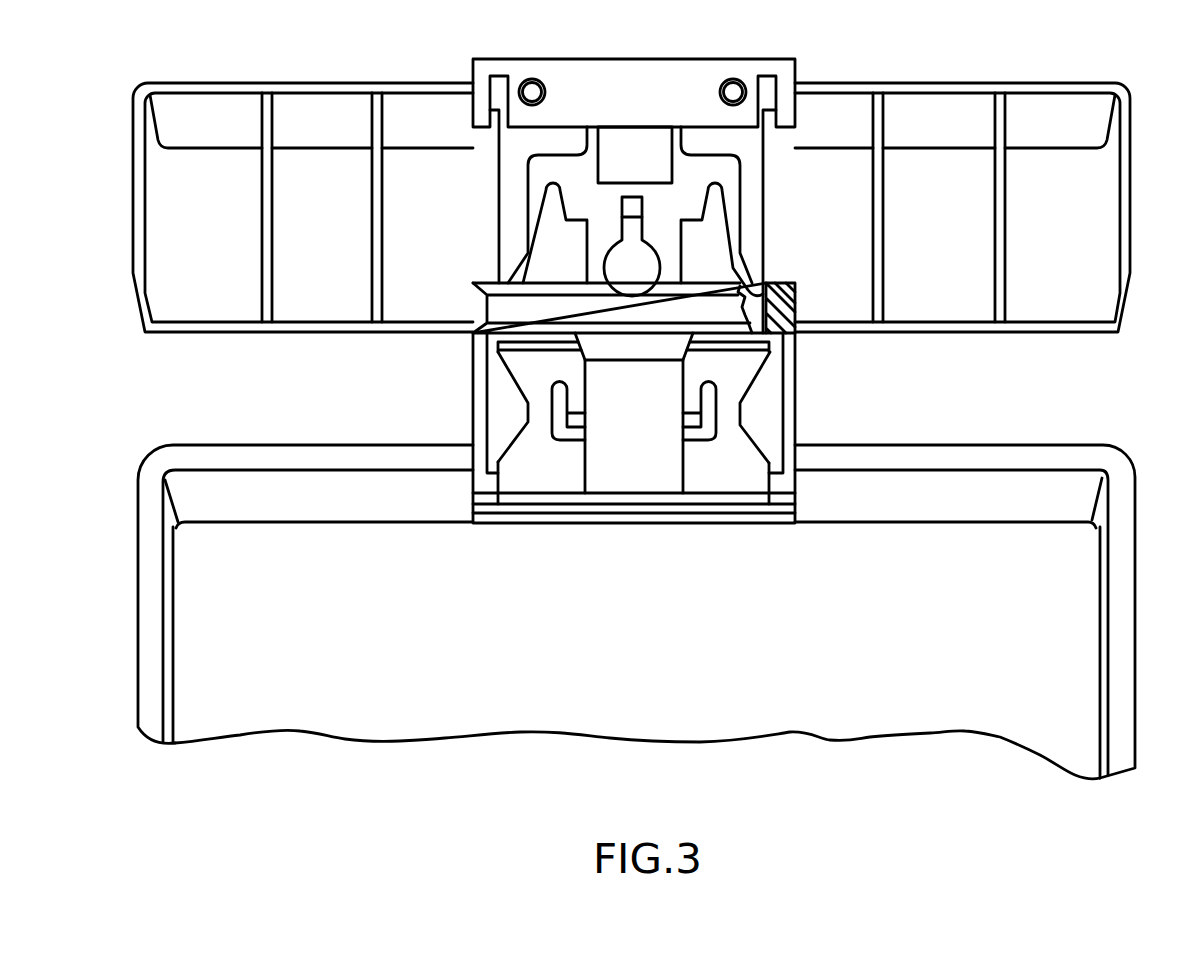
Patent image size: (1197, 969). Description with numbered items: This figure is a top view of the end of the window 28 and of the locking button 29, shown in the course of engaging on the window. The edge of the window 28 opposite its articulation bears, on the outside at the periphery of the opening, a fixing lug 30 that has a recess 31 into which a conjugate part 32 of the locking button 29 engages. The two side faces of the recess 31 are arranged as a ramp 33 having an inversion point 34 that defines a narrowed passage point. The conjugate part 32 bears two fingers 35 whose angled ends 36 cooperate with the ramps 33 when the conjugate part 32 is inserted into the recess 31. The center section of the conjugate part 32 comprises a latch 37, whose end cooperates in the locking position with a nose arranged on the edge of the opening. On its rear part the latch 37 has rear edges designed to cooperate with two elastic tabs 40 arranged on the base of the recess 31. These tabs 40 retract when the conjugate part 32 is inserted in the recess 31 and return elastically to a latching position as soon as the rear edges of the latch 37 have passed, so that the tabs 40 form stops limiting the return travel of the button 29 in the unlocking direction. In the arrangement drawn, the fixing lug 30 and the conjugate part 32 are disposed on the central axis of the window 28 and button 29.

The window 28 is at (1080, 618).
The locking button 29 is at (1102, 235).
The fixing lug 30 is at (828, 392).
The recess 31 is at (743, 377).
The conjugate part 32 is at (535, 63).
The ramp 33 is at (498, 422).
The inversion point 34 is at (502, 393).
The finger 35 is at (733, 222).
The angled end 36 is at (743, 278).
The latch 37 is at (617, 347).
The elastic tab 40 is at (693, 395).